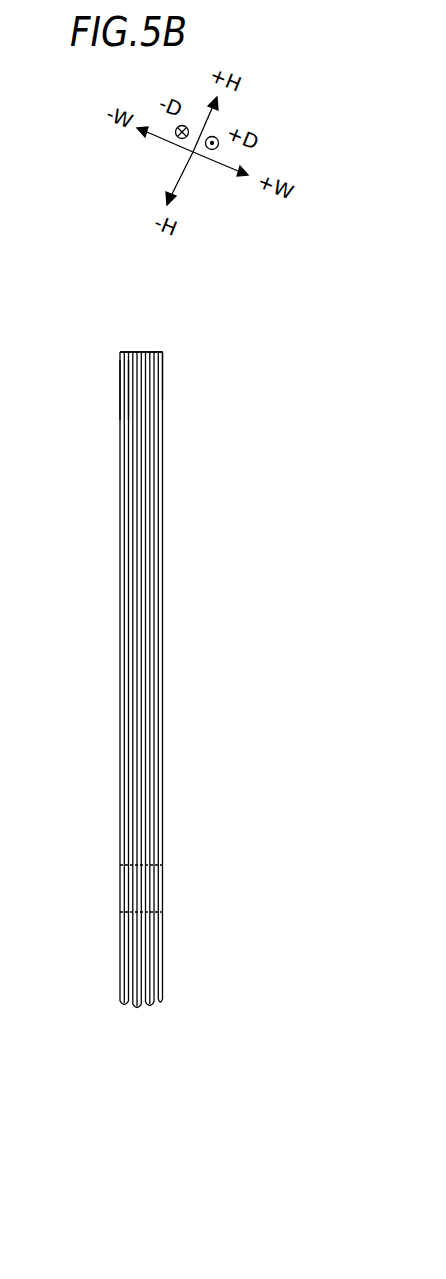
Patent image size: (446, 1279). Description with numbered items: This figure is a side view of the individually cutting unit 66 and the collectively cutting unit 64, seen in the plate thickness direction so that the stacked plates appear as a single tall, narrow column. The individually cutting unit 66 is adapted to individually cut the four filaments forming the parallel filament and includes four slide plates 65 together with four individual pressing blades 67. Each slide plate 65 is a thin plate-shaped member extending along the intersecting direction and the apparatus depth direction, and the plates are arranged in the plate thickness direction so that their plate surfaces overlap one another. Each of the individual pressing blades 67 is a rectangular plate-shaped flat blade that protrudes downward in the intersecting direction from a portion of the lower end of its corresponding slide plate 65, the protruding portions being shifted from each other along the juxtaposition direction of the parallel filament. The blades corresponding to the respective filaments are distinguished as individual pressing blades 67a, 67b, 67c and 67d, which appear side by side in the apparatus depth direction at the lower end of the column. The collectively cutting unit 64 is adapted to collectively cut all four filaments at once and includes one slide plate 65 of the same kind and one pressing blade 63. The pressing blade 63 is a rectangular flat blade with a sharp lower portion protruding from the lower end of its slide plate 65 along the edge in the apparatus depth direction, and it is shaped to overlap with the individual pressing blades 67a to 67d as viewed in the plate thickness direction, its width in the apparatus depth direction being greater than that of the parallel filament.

The pressing blade 63 is at (164, 996).
The collectively cutting unit 64 is at (159, 353).
The slide plate 65 is at (120, 378).
The individually cutting unit 66 is at (152, 348).
The individual pressing blades 67 is at (139, 747).
The individual pressing blade 67a is at (204, 720).
The individual pressing blade 67b is at (147, 1004).
The individual pressing blade 67c is at (136, 1005).
The individual pressing blade 67d is at (123, 1000).